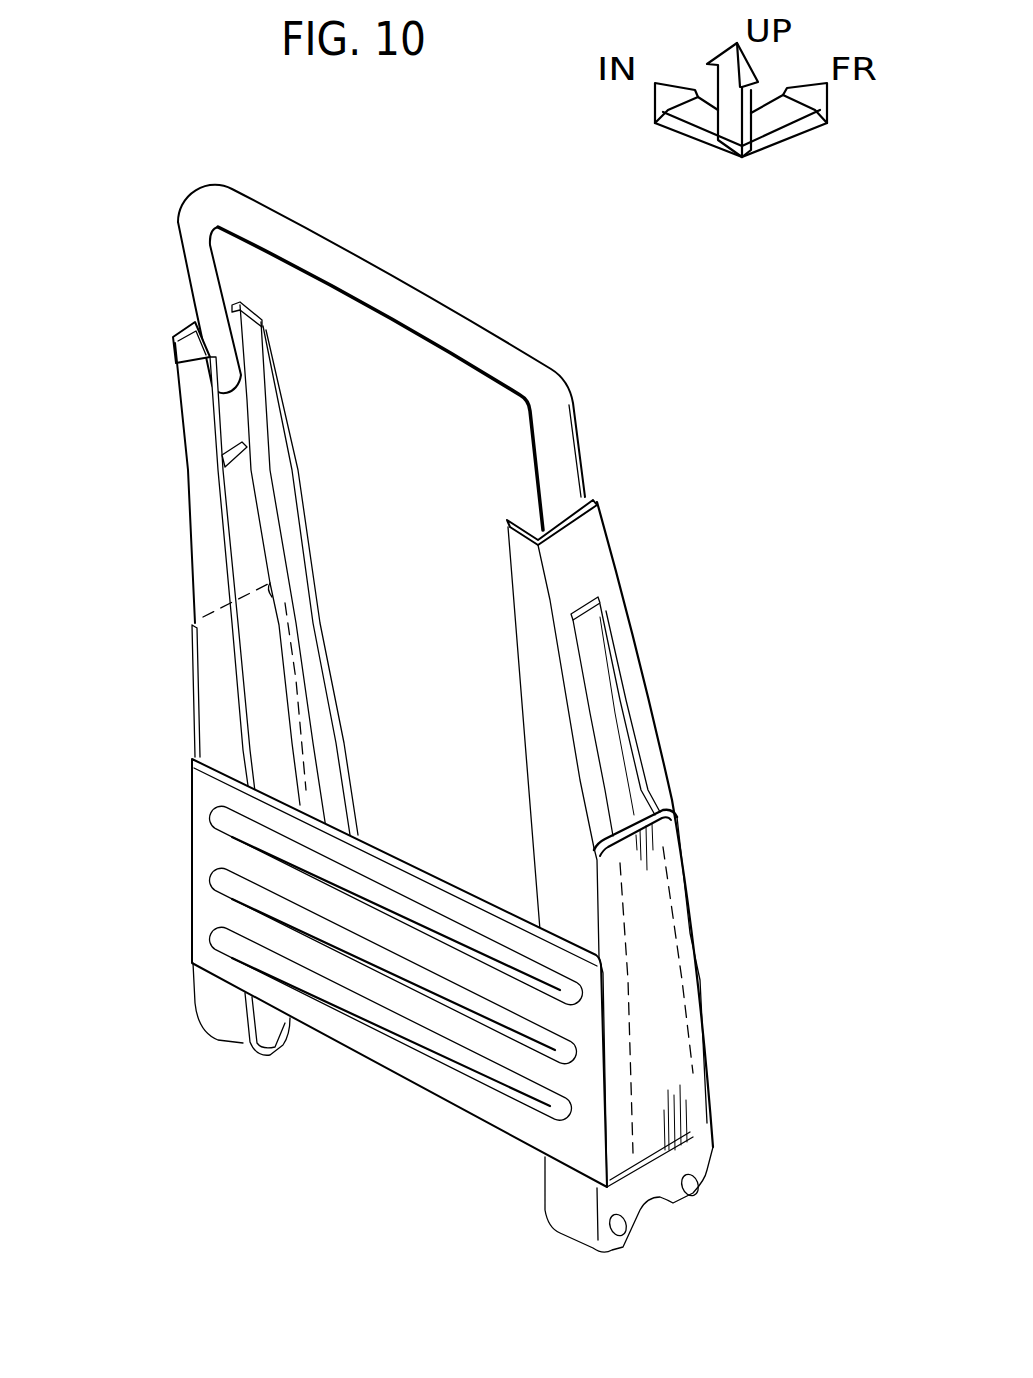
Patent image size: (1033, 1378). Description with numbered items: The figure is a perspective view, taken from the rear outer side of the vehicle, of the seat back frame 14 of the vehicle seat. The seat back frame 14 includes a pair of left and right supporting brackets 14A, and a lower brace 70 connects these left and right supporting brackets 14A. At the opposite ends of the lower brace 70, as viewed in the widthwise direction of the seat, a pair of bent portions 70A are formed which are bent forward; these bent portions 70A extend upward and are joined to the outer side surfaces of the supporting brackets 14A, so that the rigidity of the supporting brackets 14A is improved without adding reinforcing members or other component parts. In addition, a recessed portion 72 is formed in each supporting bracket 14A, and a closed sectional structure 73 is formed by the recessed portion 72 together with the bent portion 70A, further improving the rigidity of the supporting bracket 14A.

The seat back frame 14 is at (573, 410).
The supporting bracket 14A is at (207, 568).
The lower brace 70 is at (417, 855).
The bent portion 70A is at (193, 684).
The recessed portion 72 is at (612, 723).
The closed sectional structure 73 is at (622, 806).